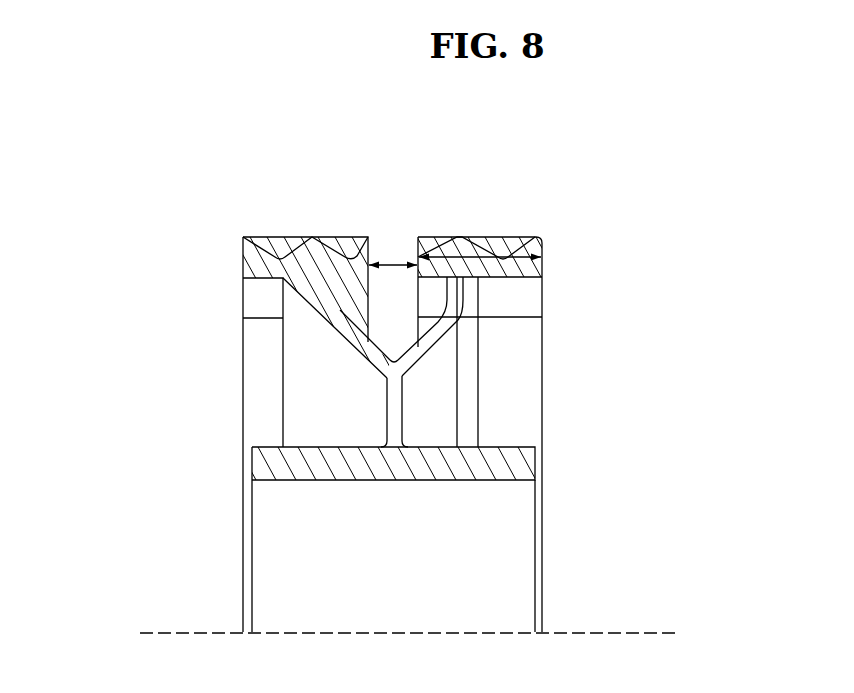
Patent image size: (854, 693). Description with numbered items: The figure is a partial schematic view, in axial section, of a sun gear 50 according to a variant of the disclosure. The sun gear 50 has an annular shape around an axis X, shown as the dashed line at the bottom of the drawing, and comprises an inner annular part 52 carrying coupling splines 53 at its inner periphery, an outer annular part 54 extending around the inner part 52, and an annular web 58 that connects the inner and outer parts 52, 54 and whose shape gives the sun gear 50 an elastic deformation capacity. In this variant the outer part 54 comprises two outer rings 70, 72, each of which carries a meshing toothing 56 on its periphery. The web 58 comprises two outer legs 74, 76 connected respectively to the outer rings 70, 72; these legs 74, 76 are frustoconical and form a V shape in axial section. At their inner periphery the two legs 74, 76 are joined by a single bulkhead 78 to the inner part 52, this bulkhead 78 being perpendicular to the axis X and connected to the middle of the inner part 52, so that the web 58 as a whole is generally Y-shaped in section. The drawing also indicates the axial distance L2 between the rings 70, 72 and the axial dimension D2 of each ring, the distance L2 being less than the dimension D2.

The sun gear 50 is at (686, 313).
The inner annular part 52 is at (555, 477).
The coupling splines 53 is at (522, 556).
The outer annular part 54 is at (573, 258).
The meshing toothing 56 is at (347, 237).
The annular web 58 is at (445, 396).
The outer ring 70 is at (263, 273).
The outer ring 72 is at (545, 273).
The outer leg 74 is at (352, 332).
The outer leg 76 is at (452, 339).
The single bulkhead 78 is at (403, 430).
The axial distance L2 is at (396, 262).
The axial dimension D2 is at (487, 237).
The axis X is at (636, 631).